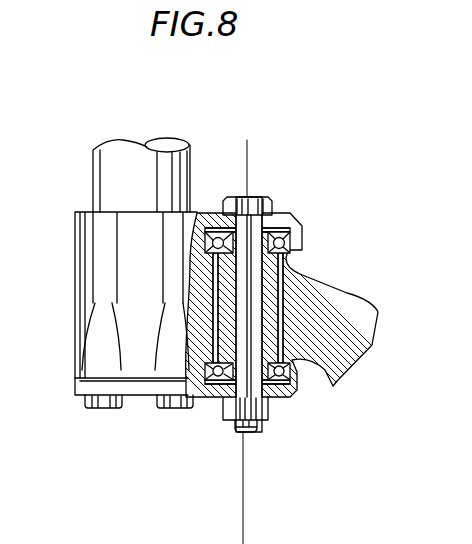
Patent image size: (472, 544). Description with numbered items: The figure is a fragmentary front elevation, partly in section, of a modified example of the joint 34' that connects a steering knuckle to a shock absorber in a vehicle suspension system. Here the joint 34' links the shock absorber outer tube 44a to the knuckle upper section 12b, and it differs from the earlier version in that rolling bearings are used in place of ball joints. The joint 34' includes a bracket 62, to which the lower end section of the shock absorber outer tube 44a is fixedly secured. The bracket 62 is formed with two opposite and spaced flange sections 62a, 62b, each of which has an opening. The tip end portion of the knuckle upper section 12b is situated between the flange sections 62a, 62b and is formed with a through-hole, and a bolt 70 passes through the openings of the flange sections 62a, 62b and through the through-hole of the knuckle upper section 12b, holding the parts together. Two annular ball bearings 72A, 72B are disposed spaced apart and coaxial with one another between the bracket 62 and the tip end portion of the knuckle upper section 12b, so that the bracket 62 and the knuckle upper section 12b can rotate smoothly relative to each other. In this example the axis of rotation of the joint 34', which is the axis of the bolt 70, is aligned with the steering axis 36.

The knuckle upper section 12b is at (338, 303).
The joint 34' is at (335, 131).
The steering axis 36 is at (244, 513).
The shock absorber outer tube 44a is at (104, 162).
The bracket 62 is at (80, 252).
The flange section 62a is at (292, 222).
The flange section 62b is at (278, 400).
The bolt 70 is at (250, 197).
The annular ball bearing 72A is at (298, 237).
The annular ball bearing 72B is at (293, 388).